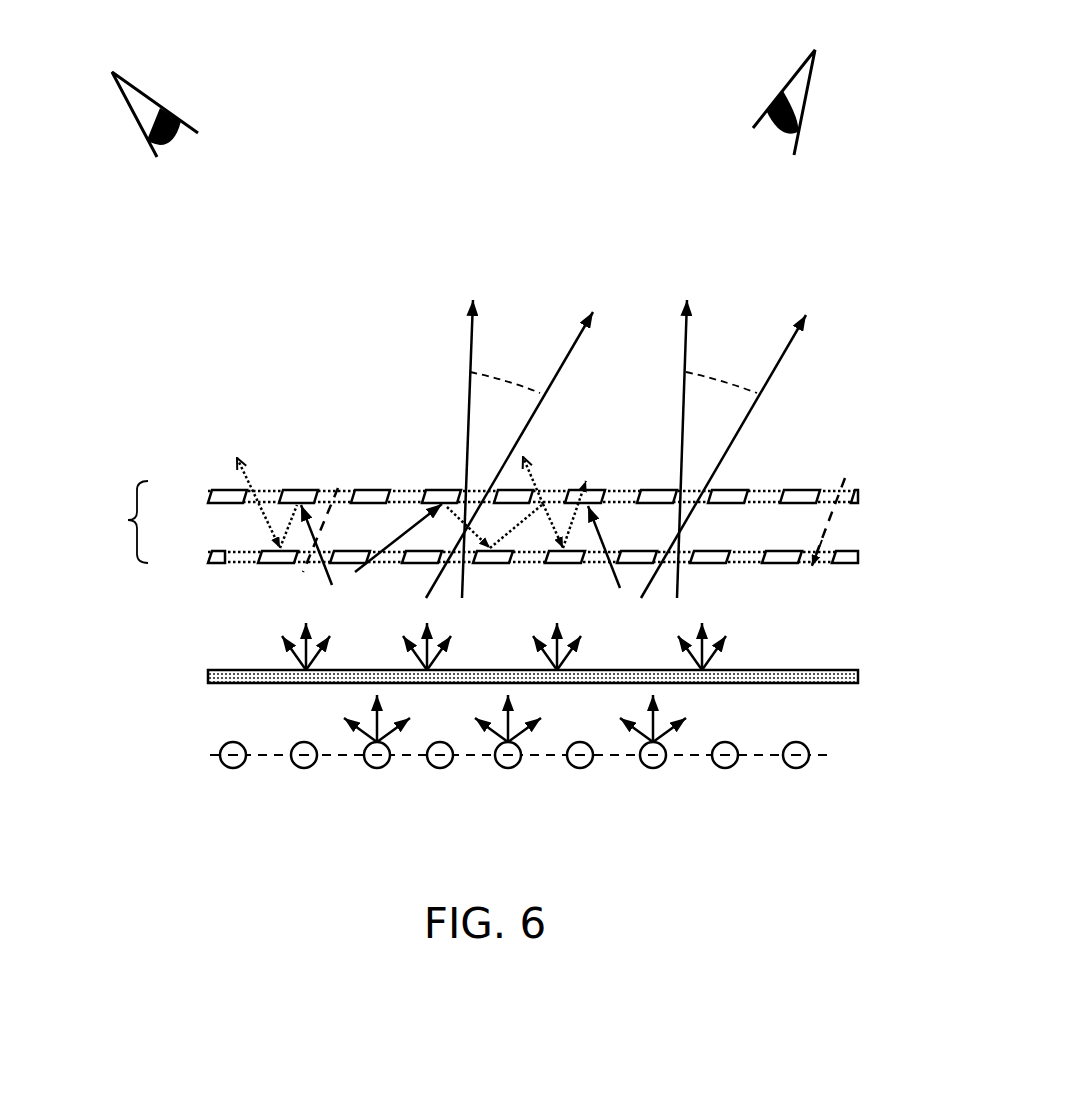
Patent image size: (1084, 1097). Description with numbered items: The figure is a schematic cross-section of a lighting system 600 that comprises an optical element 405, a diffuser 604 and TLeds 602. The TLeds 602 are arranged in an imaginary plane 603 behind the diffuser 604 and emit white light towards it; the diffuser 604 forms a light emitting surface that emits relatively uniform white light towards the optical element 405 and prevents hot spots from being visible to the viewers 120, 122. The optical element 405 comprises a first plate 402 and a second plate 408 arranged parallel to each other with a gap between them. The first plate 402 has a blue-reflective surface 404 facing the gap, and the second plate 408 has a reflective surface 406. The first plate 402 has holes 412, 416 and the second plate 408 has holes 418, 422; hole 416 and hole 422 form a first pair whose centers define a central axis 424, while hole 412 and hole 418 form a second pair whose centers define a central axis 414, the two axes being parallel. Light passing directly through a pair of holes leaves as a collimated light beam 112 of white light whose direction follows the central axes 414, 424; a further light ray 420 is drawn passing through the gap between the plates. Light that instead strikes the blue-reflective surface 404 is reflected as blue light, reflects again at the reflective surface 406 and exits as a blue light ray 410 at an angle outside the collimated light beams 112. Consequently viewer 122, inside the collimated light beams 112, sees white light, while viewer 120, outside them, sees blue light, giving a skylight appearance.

The viewer 120 is at (150, 98).
The viewer 122 is at (783, 90).
The collimated light beam 112 is at (507, 378).
The first plate 402 is at (225, 490).
The blue-reflective surface 404 is at (205, 490).
The optical element 405 is at (128, 520).
The reflective surface 406 is at (205, 565).
The second plate 408 is at (266, 566).
The blue light ray 410 is at (237, 455).
The hole 412 is at (322, 488).
The central axis 414 is at (338, 488).
The hole 416 is at (833, 480).
The hole 418 is at (302, 568).
The light ray 420 is at (355, 572).
The hole 422 is at (805, 562).
The central axis 424 is at (818, 567).
The lighting system 600 is at (182, 820).
The TLed 602 is at (304, 770).
The imaginary plane 603 is at (205, 755).
The diffuser 604 is at (208, 677).